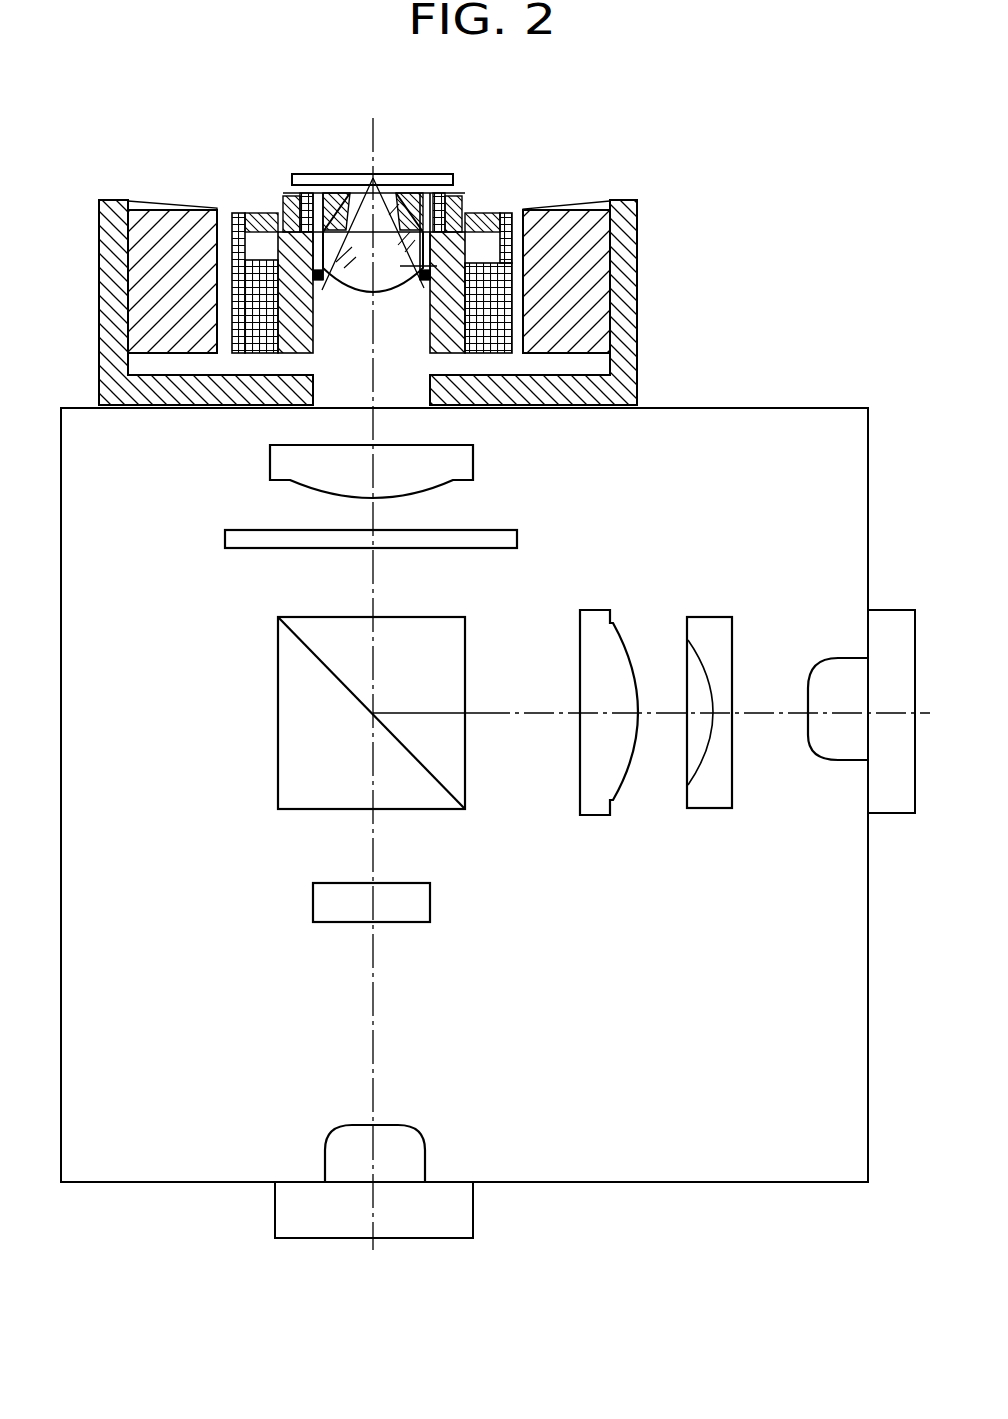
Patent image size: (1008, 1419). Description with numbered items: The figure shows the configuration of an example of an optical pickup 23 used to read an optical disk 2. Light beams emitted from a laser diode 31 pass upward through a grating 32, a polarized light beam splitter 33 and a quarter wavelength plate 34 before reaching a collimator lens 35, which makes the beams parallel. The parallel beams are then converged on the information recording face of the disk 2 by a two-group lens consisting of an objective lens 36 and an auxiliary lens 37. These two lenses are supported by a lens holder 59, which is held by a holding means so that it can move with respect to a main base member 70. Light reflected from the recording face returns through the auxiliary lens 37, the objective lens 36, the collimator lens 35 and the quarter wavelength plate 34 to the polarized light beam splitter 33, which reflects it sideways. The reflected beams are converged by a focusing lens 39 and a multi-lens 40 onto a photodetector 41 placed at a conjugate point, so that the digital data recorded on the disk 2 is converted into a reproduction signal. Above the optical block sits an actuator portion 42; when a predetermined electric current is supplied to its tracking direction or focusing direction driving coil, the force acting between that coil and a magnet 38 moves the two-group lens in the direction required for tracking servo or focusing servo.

The disk 2 is at (312, 176).
The optical pickup 23 is at (627, 1224).
The laser diode 31 is at (425, 1140).
The grating 32 is at (430, 910).
The polarized light beam splitter 33 is at (452, 810).
The quarter wavelength plate 34 is at (517, 535).
The collimator lens 35 is at (473, 462).
The objective lens 36 is at (462, 222).
The auxiliary lens 37 is at (395, 210).
The magnet 38 is at (580, 232).
The focusing lens 39 is at (598, 815).
The multi-lens 40 is at (716, 617).
The photodetector 41 is at (832, 762).
The actuator portion 42 is at (420, 225).
The lens holder 59 is at (244, 244).
The main base member 70 is at (637, 362).